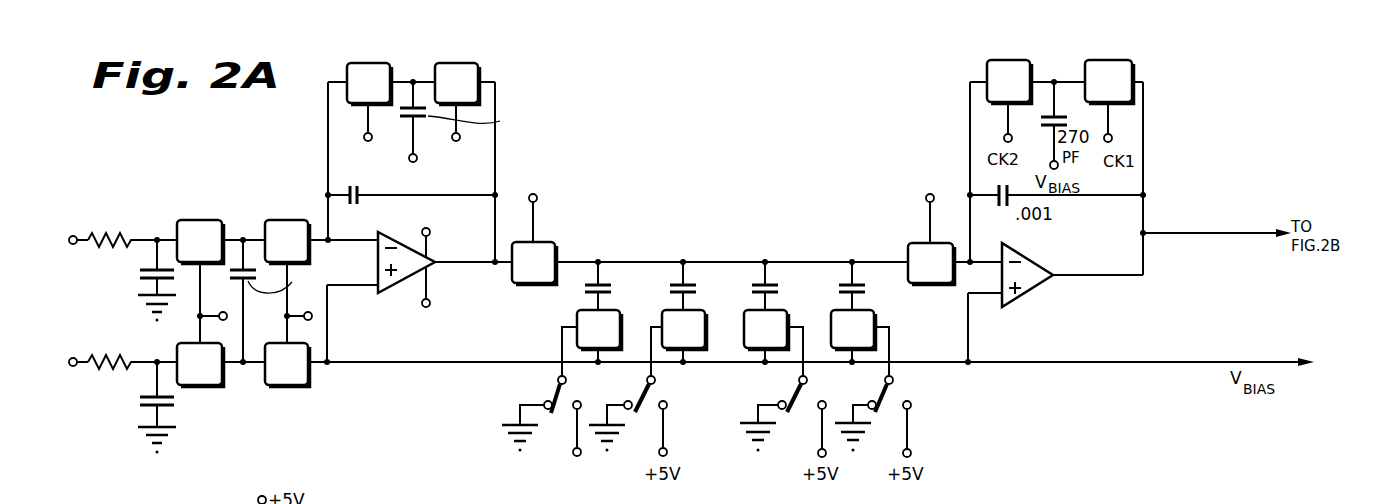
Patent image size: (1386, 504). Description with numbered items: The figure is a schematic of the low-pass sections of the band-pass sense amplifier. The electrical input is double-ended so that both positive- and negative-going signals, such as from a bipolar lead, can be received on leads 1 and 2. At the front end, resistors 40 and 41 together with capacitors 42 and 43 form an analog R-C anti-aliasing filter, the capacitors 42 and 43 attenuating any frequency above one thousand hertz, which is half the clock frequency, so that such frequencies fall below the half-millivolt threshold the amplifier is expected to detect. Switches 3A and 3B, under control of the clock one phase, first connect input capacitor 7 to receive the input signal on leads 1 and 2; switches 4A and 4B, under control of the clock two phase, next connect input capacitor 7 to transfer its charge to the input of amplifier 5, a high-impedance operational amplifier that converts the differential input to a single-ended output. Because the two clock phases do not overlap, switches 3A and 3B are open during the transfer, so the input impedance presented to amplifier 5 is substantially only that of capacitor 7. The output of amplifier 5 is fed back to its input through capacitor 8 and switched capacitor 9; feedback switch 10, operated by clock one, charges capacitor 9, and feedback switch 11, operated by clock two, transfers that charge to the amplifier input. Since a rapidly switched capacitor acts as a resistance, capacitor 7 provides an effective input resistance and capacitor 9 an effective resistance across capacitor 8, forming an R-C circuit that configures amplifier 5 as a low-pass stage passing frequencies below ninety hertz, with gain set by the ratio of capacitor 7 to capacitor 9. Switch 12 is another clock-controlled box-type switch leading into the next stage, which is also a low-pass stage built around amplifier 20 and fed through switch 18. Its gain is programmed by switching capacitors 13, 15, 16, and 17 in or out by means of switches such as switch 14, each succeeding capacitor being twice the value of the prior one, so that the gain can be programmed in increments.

The lead 1 is at (74, 236).
The lead 2 is at (73, 358).
The resistor 40 is at (104, 236).
The resistor 41 is at (104, 358).
The capacitor 42 is at (140, 285).
The capacitor 43 is at (140, 408).
The switch 3A is at (198, 220).
The switch 3B is at (210, 385).
The switch 4A is at (284, 220).
The switch 4B is at (283, 385).
The input capacitor 7 is at (236, 262).
The capacitor 8 is at (347, 209).
The amplifier 5 is at (383, 295).
The switched capacitor 9 is at (400, 117).
The feedback switch 10 is at (471, 63).
The feedback switch 11 is at (383, 63).
The switch 12 is at (555, 247).
The capacitor 13 is at (592, 288).
The switch 14 is at (621, 318).
The capacitor 15 is at (679, 288).
The capacitor 16 is at (761, 288).
The capacitor 17 is at (848, 288).
The switch 18 is at (913, 244).
The amplifier 20 is at (1030, 290).